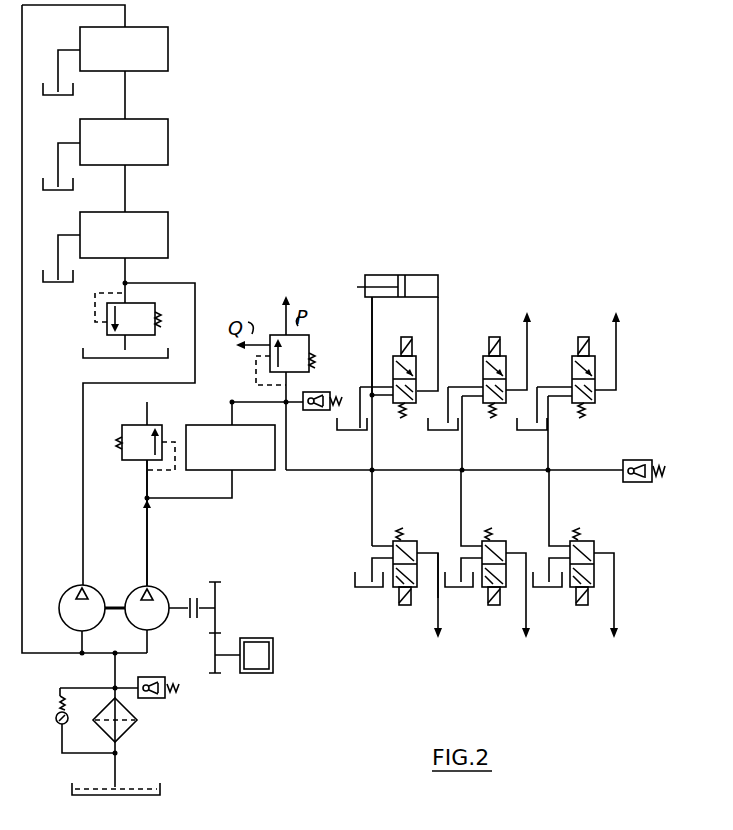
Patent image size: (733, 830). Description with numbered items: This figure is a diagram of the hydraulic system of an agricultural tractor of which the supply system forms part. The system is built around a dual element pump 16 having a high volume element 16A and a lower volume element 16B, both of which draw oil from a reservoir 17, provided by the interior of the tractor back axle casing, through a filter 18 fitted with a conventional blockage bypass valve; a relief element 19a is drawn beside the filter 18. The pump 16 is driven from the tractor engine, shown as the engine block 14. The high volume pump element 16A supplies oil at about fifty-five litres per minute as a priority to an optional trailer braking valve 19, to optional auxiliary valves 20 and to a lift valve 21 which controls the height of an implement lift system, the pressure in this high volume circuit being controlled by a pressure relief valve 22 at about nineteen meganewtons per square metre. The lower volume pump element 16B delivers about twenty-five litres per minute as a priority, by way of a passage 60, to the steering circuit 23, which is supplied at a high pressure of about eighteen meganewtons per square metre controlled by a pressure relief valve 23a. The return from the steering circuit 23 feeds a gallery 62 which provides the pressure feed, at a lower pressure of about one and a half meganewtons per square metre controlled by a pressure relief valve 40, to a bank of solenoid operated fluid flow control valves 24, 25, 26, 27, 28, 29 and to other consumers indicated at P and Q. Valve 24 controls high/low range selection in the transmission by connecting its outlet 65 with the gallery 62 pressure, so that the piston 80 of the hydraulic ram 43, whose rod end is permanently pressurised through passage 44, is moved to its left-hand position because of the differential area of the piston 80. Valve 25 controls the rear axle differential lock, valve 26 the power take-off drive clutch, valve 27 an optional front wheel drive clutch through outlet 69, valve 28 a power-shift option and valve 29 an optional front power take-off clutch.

The engine block 14 is at (273, 646).
The dual element pump 16 is at (100, 631).
The high volume pump element 16A is at (72, 593).
The lower volume pump element 16B is at (163, 590).
The reservoir 17 is at (83, 353).
The filter 18 is at (125, 731).
The trailer braking valve 19 is at (168, 230).
The relief valve 19a is at (57, 700).
The auxiliary valves 20 is at (168, 128).
The lift valve 21 is at (168, 38).
The pressure relief valve 22 is at (107, 322).
The steering circuit 23 is at (262, 472).
The pressure relief valve 23a is at (124, 426).
The solenoid operated fluid flow control valve 24 is at (410, 405).
The solenoid operated fluid flow control valve 25 is at (503, 404).
The solenoid operated fluid flow control valve 26 is at (598, 404).
The solenoid operated fluid flow control valve 27 is at (416, 541).
The solenoid operated fluid flow control valve 28 is at (503, 541).
The solenoid operated fluid flow control valve 29 is at (591, 545).
The pressure relief valve 40 is at (309, 365).
The hydraulic cylinder 43 is at (375, 275).
The hydraulic line 44 is at (372, 320).
The passage 60 is at (147, 540).
The gallery 62 is at (287, 474).
The outlet 65 is at (438, 347).
The outlet 69 is at (438, 617).
The piston 80 is at (402, 275).